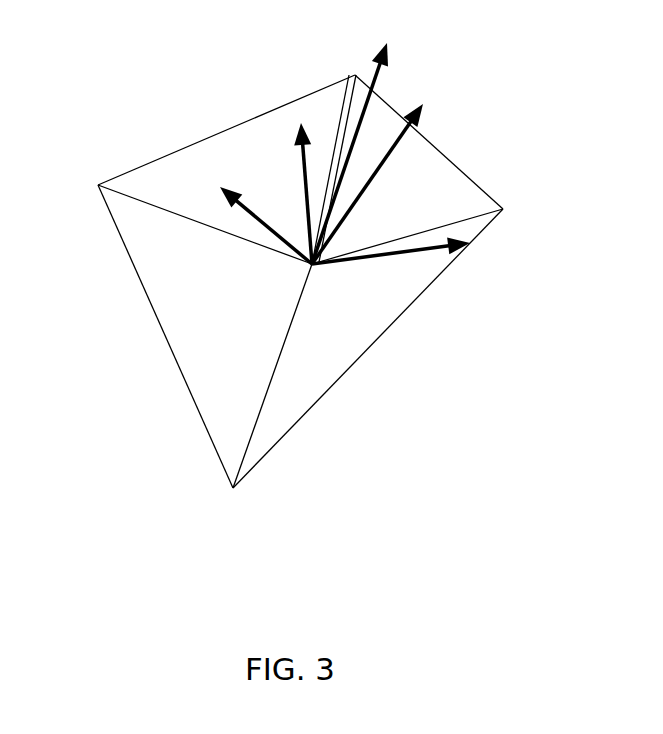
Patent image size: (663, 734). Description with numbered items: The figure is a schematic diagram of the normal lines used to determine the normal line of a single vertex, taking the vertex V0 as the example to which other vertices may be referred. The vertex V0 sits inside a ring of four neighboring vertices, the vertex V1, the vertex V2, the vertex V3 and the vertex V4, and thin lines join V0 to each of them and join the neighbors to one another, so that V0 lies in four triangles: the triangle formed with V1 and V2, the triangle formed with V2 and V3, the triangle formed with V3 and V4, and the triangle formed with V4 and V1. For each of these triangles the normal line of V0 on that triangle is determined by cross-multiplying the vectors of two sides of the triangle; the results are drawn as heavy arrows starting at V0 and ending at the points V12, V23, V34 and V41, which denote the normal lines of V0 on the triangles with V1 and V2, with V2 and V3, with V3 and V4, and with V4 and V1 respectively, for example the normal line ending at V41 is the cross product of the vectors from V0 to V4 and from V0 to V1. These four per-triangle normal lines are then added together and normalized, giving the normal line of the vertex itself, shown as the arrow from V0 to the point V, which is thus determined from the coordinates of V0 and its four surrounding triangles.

The vertex V0 is at (300, 281).
The vertex V1 is at (352, 377).
The vertex V2 is at (459, 153).
The vertex V3 is at (226, 113).
The vertex V4 is at (137, 333).
The normal line of the vertex V is at (358, 139).
The normal line of the vertex on triangle v0v1v2 V12 is at (407, 259).
The normal line of the vertex on triangle v0v2v3 V23 is at (395, 183).
The normal line of the vertex on triangle v0v3v4 V34 is at (289, 180).
The normal line of the vertex on triangle v0v4v1 V41 is at (239, 221).